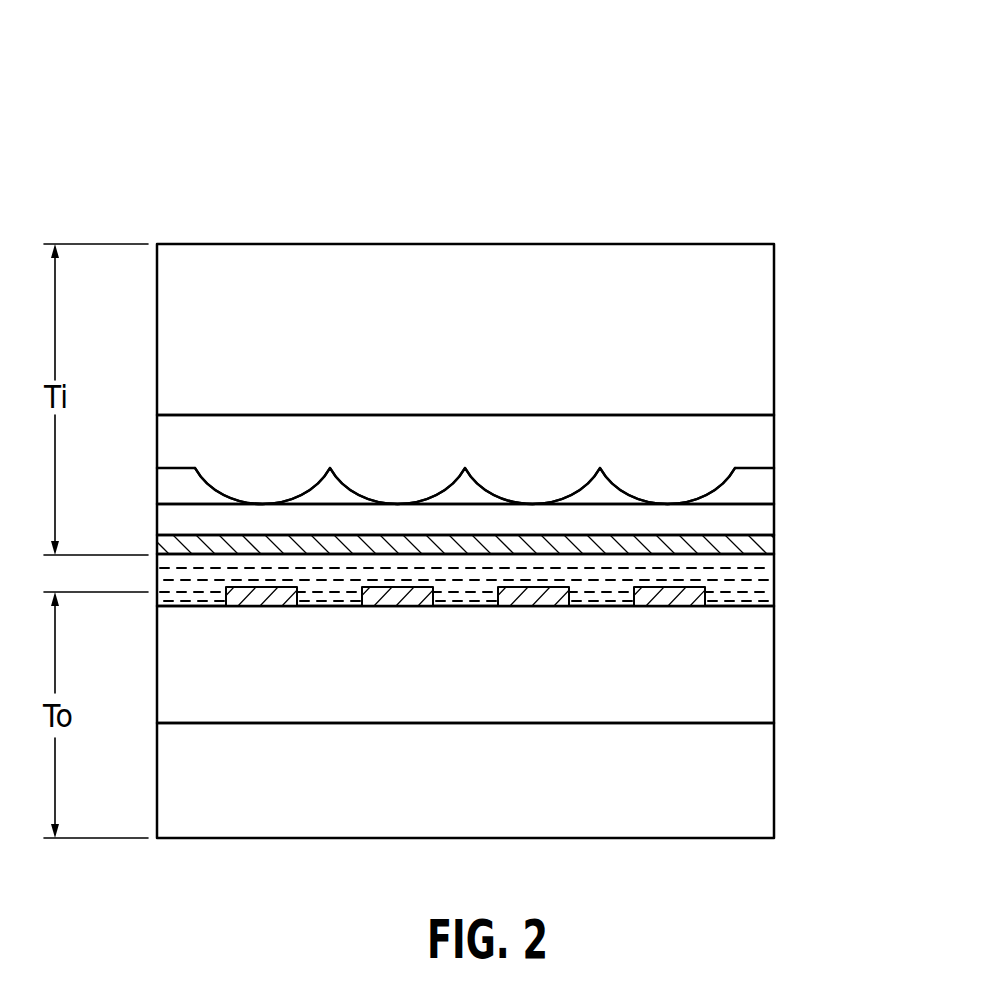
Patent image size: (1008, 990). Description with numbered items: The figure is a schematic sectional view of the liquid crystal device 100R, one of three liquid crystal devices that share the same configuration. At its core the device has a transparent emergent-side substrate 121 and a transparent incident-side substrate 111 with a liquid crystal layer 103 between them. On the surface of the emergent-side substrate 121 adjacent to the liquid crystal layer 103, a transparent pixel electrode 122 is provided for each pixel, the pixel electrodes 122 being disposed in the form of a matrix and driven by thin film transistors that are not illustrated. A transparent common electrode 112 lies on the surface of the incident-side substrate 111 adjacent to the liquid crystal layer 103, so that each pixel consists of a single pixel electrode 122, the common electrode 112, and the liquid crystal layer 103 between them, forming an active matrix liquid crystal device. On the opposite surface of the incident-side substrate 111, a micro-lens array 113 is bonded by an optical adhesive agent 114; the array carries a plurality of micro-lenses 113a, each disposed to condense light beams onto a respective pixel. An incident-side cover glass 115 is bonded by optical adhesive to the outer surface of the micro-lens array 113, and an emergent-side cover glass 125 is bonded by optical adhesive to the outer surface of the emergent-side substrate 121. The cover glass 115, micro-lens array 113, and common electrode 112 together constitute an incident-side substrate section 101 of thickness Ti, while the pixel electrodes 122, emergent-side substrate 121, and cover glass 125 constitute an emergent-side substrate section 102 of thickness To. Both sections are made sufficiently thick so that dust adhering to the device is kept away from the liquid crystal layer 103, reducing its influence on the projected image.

The liquid crystal device 100R is at (540, 426).
The incident-side substrate section 101 is at (540, 408).
The emergent-side substrate section 102 is at (543, 712).
The liquid crystal layer 103 is at (750, 585).
The incident-side substrate 111 is at (775, 518).
The common electrode 112 is at (506, 553).
The micro-lens array 113 is at (775, 446).
The micro-lens 113a is at (677, 473).
The optical adhesive agent 114 is at (775, 490).
The incident-side cover glass 115 is at (745, 351).
The emergent-side substrate 121 is at (755, 680).
The pixel electrode 122 is at (690, 606).
The emergent-side cover glass 125 is at (509, 780).